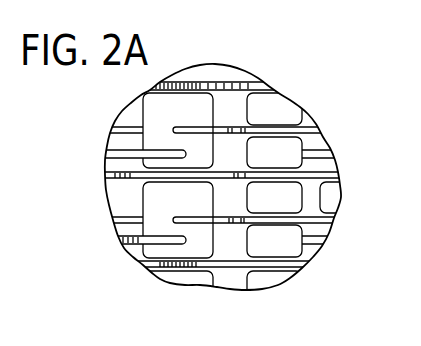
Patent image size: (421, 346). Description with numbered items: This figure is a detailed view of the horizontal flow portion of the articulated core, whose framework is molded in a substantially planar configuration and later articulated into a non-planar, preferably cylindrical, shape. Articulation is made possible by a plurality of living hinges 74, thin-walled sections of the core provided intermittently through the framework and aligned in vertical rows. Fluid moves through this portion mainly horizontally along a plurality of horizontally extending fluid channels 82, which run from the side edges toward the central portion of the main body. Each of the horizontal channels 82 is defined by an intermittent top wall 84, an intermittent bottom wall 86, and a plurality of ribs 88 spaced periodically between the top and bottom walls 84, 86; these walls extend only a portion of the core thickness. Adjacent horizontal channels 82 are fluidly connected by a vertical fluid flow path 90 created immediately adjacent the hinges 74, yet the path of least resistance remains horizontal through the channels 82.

The living hinge 74 is at (187, 88).
The horizontally extending fluid channel 82 is at (275, 107).
The intermittent top wall 84 is at (237, 78).
The intermittent bottom wall 86 is at (306, 128).
The rib 88 is at (219, 97).
The fluid flow path 90 is at (171, 140).